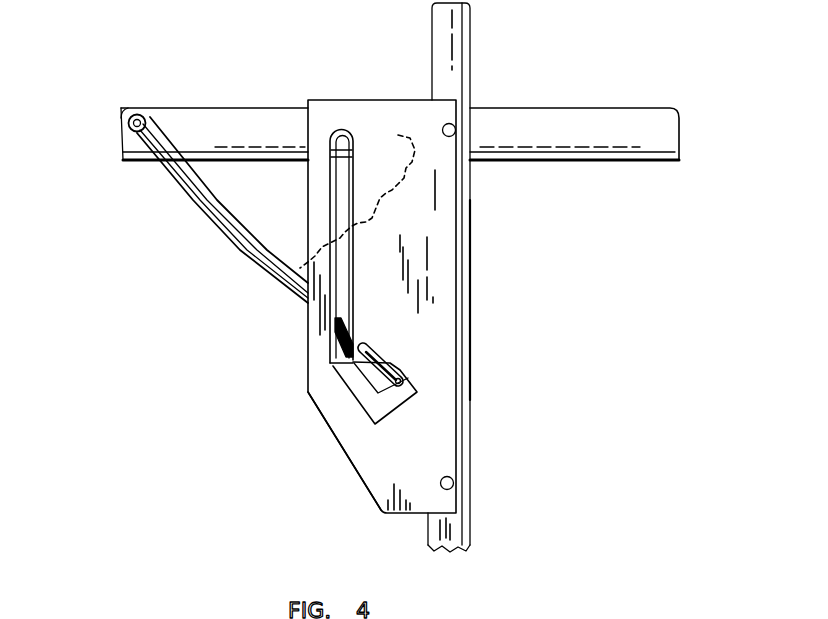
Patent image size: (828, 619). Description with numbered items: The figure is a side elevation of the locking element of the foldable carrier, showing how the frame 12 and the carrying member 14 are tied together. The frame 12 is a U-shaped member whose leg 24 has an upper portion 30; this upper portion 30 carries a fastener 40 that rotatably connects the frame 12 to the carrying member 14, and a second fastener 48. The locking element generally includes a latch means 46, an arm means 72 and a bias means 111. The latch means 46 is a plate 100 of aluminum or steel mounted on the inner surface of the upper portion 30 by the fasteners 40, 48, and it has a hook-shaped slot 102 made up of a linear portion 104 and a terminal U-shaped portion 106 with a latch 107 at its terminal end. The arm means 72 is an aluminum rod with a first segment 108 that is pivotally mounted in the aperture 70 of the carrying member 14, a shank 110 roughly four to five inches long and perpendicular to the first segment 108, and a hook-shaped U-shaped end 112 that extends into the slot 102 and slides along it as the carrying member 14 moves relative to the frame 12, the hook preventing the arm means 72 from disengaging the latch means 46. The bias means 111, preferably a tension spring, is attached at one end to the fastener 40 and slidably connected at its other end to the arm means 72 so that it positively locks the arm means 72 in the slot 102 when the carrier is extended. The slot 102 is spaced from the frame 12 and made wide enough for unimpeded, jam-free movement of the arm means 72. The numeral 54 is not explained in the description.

The frame 12 is at (433, 38).
The carrying member 14 is at (213, 98).
The leg 24 is at (475, 283).
The upper portion 30 is at (460, 553).
The fastener 40 is at (444, 126).
The latch means 46 is at (358, 458).
The second fastener 48 is at (455, 482).
The rail extension 54 is at (605, 118).
The aperture 70 is at (118, 114).
The arm means 72 is at (210, 212).
The plate 100 is at (440, 447).
The slot 102 is at (355, 277).
The linear portion 104 is at (337, 188).
The U-shaped portion 106 is at (373, 410).
The latch 107 is at (397, 368).
The first segment 108 is at (143, 152).
The shank 110 is at (253, 265).
The bias means 111 is at (357, 198).
The U-shaped end 112 is at (363, 408).